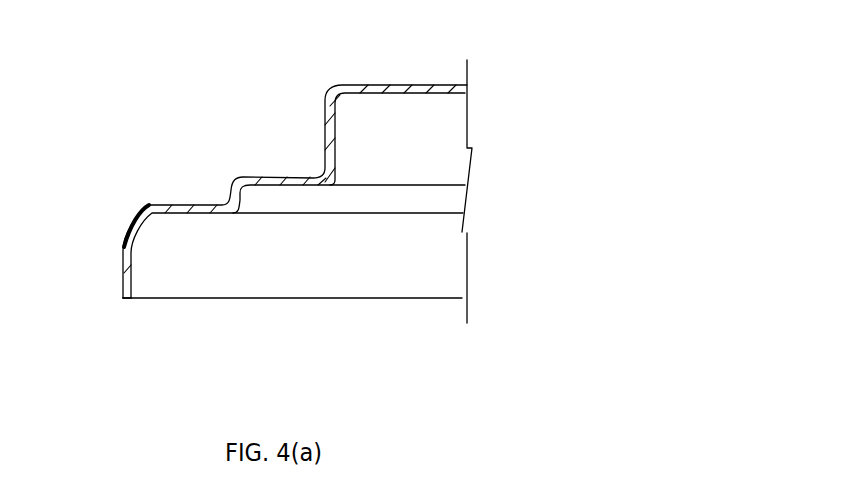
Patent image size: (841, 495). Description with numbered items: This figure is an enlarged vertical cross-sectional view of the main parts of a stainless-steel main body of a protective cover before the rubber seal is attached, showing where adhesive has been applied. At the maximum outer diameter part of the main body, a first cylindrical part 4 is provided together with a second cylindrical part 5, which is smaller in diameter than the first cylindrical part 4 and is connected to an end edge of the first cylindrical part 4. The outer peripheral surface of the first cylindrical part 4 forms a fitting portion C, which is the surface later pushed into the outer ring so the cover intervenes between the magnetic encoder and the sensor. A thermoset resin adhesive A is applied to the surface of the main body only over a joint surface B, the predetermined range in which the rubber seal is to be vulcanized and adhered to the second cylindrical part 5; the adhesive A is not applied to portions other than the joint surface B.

The first cylindrical part 4 is at (132, 283).
The second cylindrical part 5 is at (141, 229).
The thermoset resin adhesive A is at (130, 217).
The joint surface B is at (123, 237).
The fitting portion C is at (122, 290).